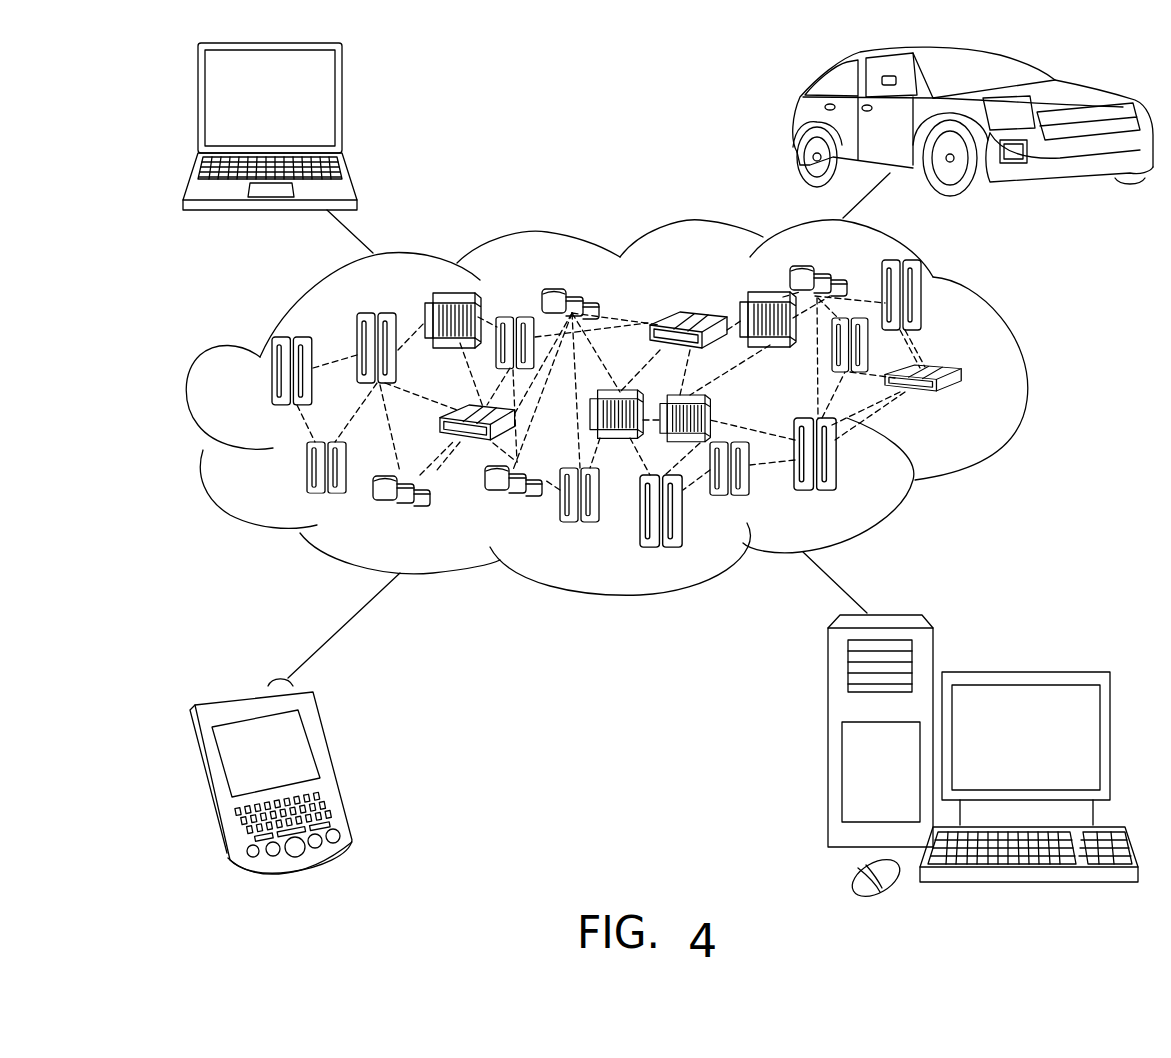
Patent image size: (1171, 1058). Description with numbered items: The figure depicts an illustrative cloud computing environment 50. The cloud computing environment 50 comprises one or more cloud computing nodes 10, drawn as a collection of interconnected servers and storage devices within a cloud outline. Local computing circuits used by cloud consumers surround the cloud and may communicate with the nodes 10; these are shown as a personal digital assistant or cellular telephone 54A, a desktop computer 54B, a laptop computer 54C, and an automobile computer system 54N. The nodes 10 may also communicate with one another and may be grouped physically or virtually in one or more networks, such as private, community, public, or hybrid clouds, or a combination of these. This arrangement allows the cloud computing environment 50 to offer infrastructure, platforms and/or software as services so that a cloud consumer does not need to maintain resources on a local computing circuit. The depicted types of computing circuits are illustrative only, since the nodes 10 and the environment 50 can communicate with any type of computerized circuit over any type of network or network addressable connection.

The cloud computing node 10 is at (963, 410).
The cloud computing environment 50 is at (1024, 382).
The personal digital assistant or cellular telephone 54A is at (333, 767).
The desktop computer 54B is at (1025, 670).
The laptop computer 54C is at (342, 107).
The automobile computer system 54N is at (796, 121).